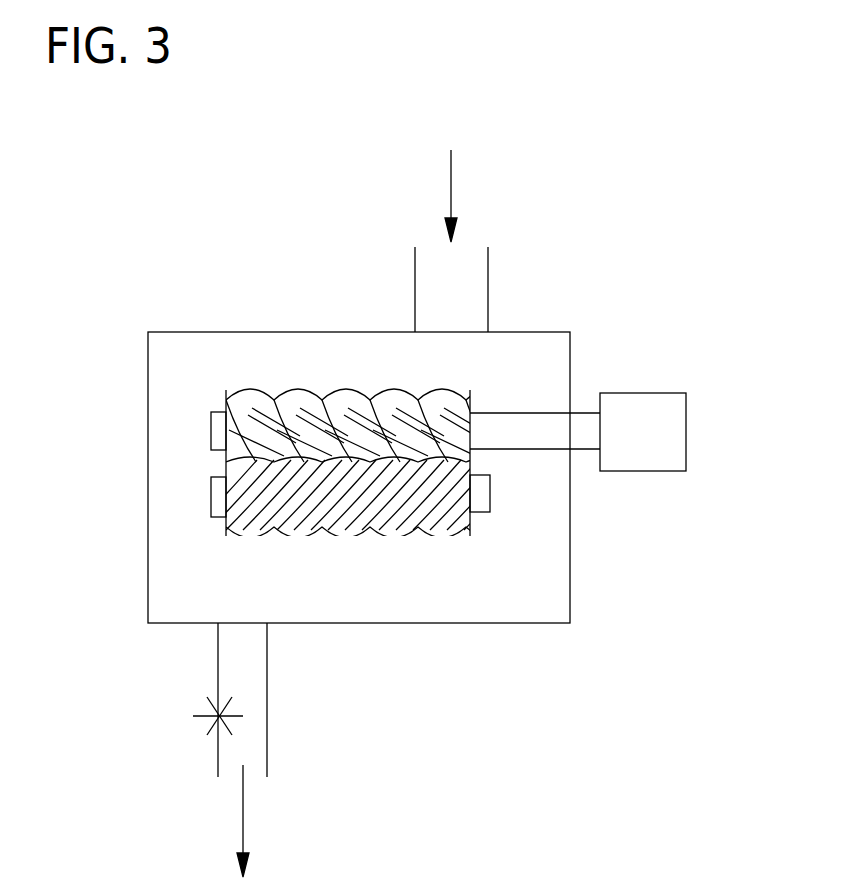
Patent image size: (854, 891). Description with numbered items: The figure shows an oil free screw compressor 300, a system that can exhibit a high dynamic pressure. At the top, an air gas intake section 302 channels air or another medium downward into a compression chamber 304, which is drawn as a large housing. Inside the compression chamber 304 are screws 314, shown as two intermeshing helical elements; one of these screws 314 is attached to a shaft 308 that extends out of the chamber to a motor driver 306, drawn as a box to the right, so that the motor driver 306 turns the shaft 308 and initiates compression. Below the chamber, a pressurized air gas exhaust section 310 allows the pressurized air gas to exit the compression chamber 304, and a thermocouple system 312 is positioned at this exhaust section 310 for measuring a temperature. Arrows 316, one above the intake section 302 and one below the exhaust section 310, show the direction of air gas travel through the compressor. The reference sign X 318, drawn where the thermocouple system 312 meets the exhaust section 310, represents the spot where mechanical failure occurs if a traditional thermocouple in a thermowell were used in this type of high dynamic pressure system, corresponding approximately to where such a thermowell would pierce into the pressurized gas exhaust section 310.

The oil free screw compressor 300 is at (138, 167).
The air gas intake section 302 is at (488, 268).
The compression chamber 304 is at (535, 363).
The motor driver 306 is at (686, 405).
The shaft 308 is at (548, 447).
The pressurized air gas exhaust section 310 is at (267, 680).
The thermocouple system 312 is at (198, 713).
The screws 314 is at (268, 390).
The arrows 316 is at (451, 172).
The reference sign X 318 is at (215, 725).